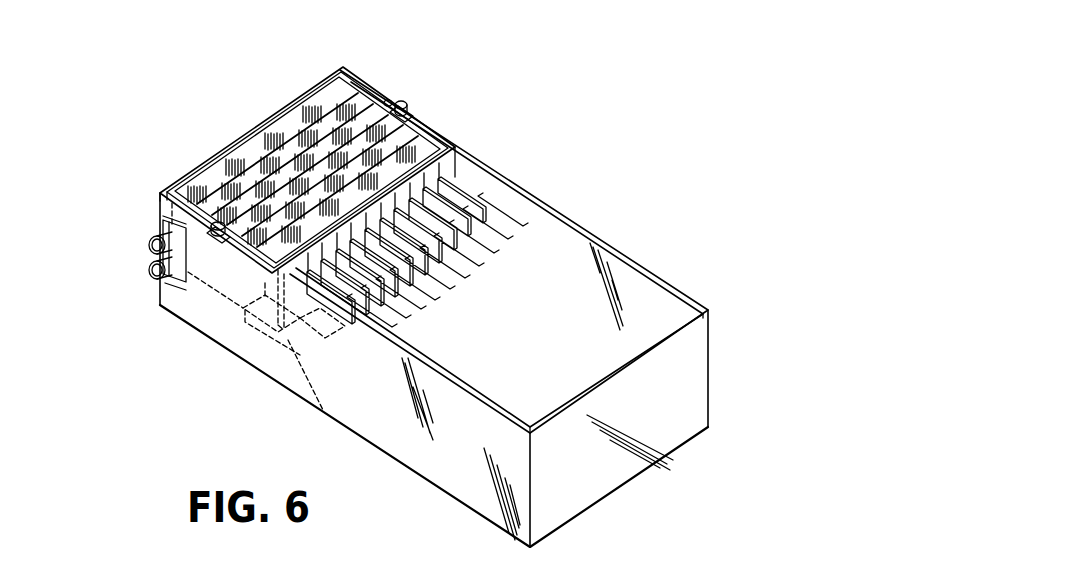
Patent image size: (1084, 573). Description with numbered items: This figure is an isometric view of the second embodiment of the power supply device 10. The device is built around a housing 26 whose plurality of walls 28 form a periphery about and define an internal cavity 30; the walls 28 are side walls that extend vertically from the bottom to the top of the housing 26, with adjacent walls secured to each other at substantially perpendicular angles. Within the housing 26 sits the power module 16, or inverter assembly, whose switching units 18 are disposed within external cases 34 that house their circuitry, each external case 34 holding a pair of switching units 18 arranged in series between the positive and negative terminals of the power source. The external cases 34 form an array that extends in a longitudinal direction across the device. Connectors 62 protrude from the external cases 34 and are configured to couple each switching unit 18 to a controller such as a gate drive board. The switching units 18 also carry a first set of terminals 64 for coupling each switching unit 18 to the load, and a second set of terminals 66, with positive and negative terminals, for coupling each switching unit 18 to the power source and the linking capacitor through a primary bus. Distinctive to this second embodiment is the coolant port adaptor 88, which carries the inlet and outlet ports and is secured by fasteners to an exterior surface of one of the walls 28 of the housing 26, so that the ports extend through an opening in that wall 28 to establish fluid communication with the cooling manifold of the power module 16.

The power supply device 10 is at (435, 282).
The power module 16 is at (456, 292).
The switching units 18 is at (307, 169).
The external cases 34 is at (298, 122).
The housing 26 is at (710, 428).
The walls 28 is at (657, 276).
The internal cavity 30 is at (545, 388).
The connectors 62 is at (390, 101).
The first set of terminals 64 is at (437, 262).
The second set of terminals 66 is at (386, 296).
The coolant port adaptor 88 is at (158, 252).